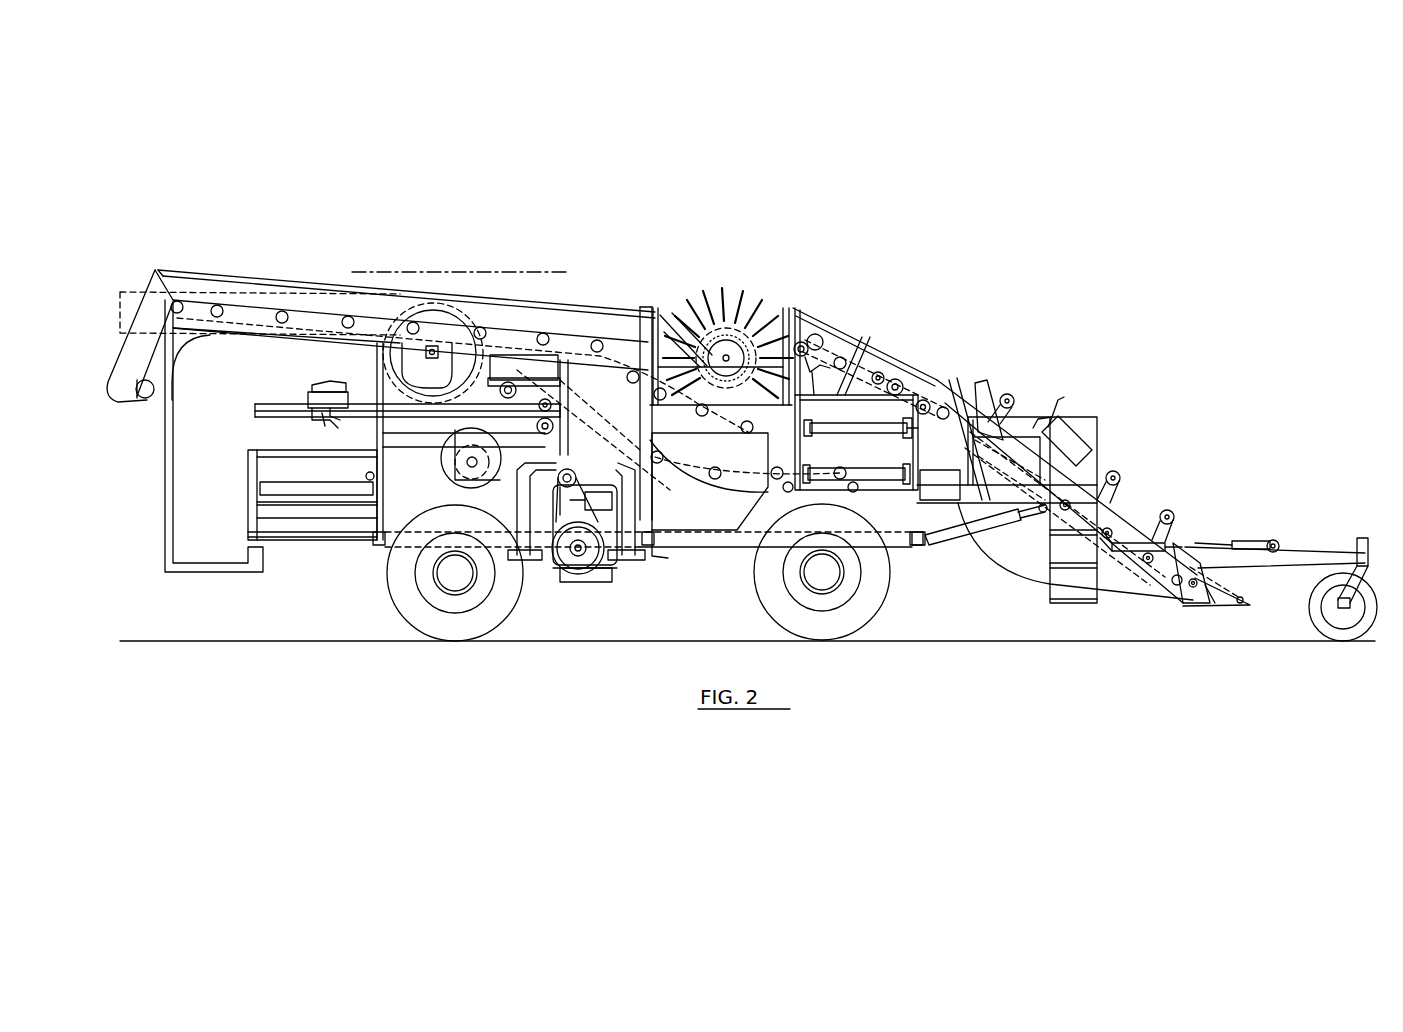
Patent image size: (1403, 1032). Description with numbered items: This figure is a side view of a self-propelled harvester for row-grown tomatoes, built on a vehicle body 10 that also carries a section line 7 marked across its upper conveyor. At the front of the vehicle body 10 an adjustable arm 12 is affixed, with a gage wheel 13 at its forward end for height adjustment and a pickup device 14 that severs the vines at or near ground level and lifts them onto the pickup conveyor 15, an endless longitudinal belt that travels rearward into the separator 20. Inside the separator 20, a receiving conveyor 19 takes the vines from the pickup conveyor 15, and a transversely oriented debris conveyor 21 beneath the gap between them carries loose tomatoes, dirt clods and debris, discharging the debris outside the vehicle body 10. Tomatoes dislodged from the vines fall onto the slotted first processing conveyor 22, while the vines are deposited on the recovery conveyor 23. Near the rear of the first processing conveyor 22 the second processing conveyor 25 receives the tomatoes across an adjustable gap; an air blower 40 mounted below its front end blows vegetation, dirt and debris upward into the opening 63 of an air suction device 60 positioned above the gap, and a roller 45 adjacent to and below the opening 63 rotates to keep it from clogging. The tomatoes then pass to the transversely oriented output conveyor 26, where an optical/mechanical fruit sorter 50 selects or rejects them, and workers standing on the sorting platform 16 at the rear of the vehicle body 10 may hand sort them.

The section line 7- 7 is at (365, 270).
The vehicle body 10 is at (658, 232).
The adjustable arm 12 is at (1331, 551).
The gage wheel 13 is at (1316, 613).
The pickup device 14 is at (1199, 604).
The pickup conveyor 15 is at (1111, 514).
The sorting platform 16 is at (197, 557).
The receiving conveyor 19 is at (866, 366).
The separator 20 is at (729, 292).
The debris conveyor 21 is at (844, 420).
The first processing conveyor 22 is at (652, 556).
The recovery conveyor 23 is at (682, 430).
The second processing conveyor 25 is at (413, 427).
The output conveyor 26 is at (273, 480).
The air blower 40 is at (452, 500).
The roller 45 is at (500, 404).
The optical/mechanical fruit sorter 50 is at (322, 394).
The air suction device 60 is at (447, 296).
The opening 63 is at (516, 370).